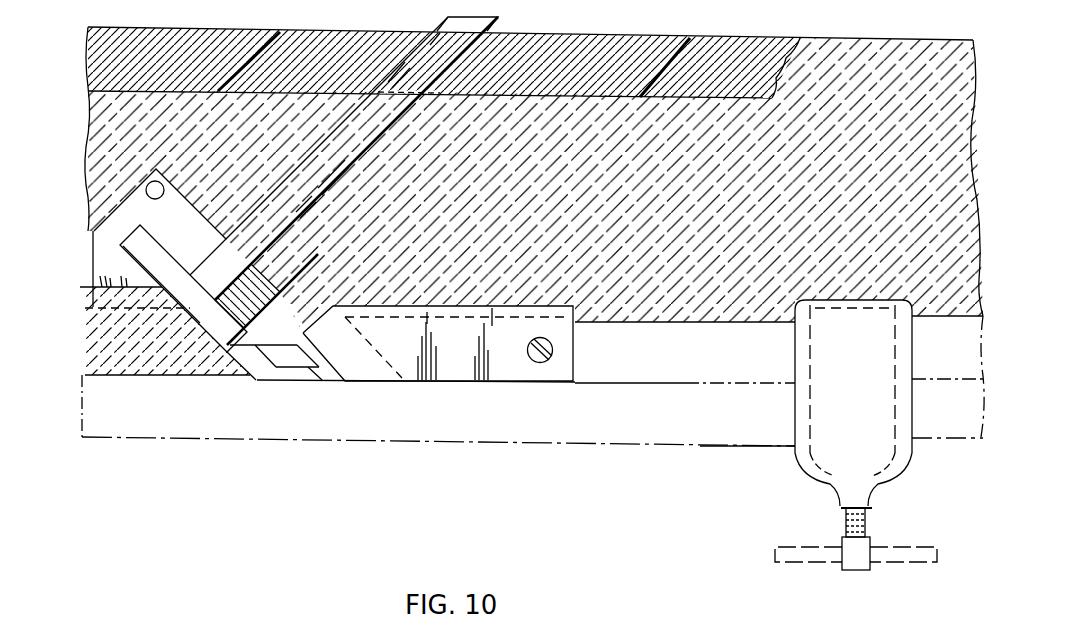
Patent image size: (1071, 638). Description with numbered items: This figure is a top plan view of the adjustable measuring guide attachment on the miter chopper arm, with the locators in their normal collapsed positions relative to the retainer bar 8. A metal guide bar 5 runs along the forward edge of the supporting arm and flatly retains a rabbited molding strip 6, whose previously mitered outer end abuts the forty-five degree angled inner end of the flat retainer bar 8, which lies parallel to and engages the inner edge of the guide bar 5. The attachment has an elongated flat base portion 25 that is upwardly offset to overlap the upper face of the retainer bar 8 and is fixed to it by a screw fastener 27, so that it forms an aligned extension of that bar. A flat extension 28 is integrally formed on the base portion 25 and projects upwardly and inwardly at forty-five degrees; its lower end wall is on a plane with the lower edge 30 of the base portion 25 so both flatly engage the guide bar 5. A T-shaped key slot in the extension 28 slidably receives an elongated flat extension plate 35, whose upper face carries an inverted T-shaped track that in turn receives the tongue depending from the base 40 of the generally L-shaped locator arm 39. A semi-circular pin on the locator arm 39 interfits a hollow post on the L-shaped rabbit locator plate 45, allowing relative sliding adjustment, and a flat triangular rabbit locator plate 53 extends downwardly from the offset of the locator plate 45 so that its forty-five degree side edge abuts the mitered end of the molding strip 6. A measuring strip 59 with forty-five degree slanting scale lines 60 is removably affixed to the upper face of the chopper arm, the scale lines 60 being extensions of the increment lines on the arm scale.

The guide bar 5 is at (632, 432).
The rabbited molding strip 6 is at (125, 360).
The retainer bar 8 is at (727, 322).
The base portion 25 is at (449, 305).
The screw fastener 27 is at (547, 338).
The extension 28 is at (252, 358).
The lower edge 30 is at (735, 385).
The extension plate 35 is at (262, 287).
The locator arm 39 is at (357, 152).
The base 40 is at (243, 254).
The rabbit locator plate 45 is at (211, 185).
The triangular rabbit locator plate 53 is at (129, 274).
The measuring strip 59 is at (598, 44).
The scale lines 60 is at (673, 55).